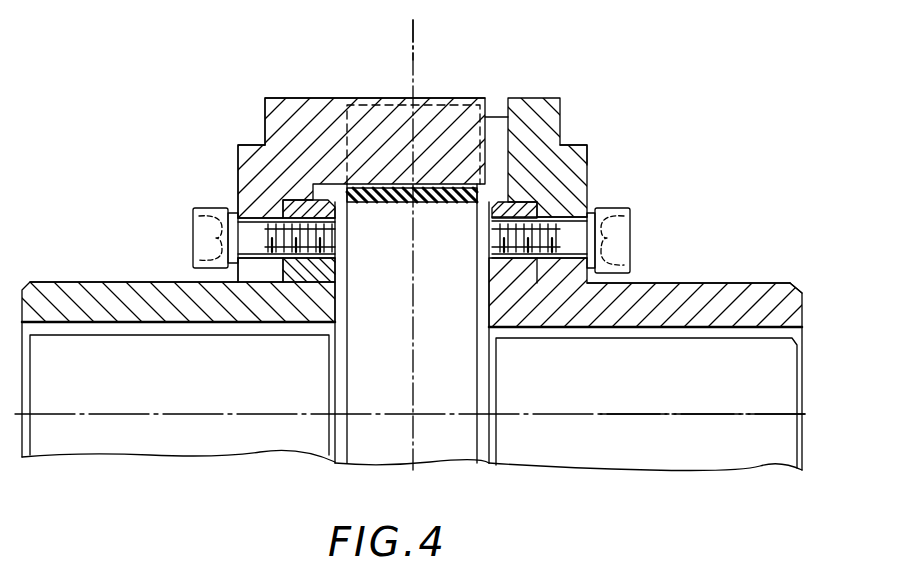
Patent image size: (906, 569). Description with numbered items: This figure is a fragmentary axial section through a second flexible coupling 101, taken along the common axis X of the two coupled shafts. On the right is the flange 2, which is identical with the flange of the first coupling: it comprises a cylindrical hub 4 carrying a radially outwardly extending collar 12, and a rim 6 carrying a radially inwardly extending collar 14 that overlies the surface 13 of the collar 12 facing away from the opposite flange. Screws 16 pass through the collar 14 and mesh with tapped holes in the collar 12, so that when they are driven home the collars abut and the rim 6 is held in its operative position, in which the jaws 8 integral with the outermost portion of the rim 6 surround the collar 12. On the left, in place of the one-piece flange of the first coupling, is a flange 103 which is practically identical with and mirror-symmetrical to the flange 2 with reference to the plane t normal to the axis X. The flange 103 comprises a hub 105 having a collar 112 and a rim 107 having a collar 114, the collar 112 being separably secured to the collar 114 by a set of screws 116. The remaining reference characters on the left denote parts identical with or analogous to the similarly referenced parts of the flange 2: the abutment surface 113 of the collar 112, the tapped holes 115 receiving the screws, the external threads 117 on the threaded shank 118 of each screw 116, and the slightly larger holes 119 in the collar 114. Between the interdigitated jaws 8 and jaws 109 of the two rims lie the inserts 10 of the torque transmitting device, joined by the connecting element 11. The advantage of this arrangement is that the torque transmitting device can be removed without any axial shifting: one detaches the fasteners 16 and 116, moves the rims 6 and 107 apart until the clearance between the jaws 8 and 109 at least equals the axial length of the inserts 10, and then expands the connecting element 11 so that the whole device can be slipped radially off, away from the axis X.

The flange 2 is at (776, 256).
The hub 4 is at (797, 305).
The rim 6 is at (587, 184).
The jaws 8 is at (492, 126).
The inserts 10 is at (432, 99).
The connecting element 11 is at (447, 198).
The collar 12 is at (495, 266).
The surface 13 is at (587, 160).
The collar 14 is at (572, 276).
The screws 16 is at (630, 238).
The second flexible coupling 101 is at (707, 234).
The flange 103 is at (90, 266).
The hub 105 is at (143, 310).
The rim 107 is at (281, 97).
The jaws 109 is at (318, 105).
The collar 112 is at (335, 213).
The clamp shoulder 113 is at (273, 196).
The collar 114 is at (258, 272).
The spacer ring 115 is at (328, 272).
The screws 116 is at (200, 208).
The bolt shank 117 is at (335, 240).
The washer 118 is at (250, 237).
The clamp face 119 is at (252, 212).
The plane t is at (414, 38).
The common axis X is at (708, 416).